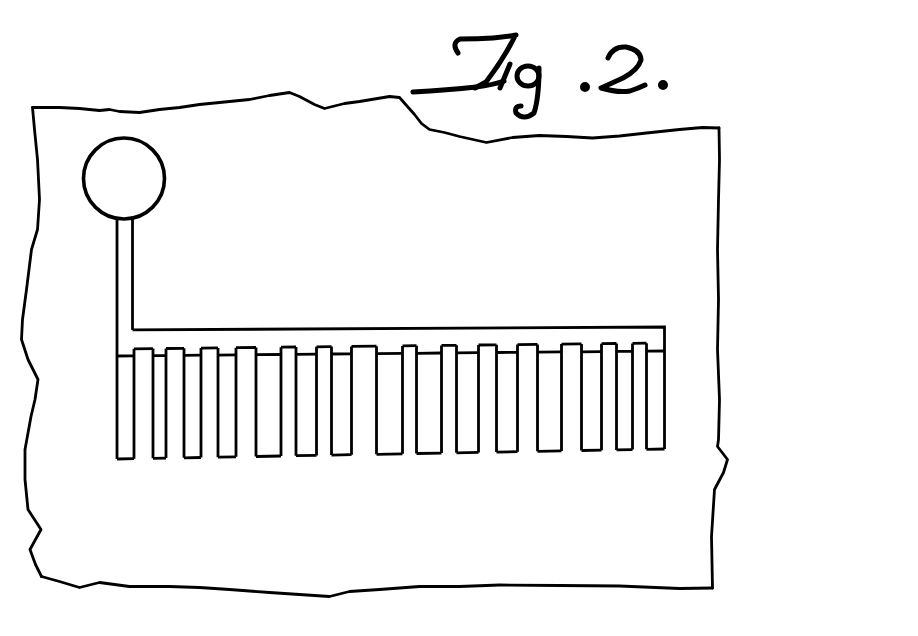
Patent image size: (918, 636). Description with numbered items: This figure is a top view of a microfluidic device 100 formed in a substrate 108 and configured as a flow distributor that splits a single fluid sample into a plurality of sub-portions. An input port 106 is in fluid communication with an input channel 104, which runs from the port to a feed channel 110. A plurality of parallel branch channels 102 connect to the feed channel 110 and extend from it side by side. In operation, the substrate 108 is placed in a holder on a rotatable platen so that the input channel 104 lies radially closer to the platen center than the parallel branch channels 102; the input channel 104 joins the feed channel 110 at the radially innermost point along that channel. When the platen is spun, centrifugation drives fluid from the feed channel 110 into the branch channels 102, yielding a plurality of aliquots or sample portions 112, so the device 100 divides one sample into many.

The microfluidic device 100 is at (661, 240).
The parallel branch channels 102 is at (653, 410).
The input channel 104 is at (122, 238).
The input port 106 is at (132, 140).
The substrate 108 is at (683, 157).
The feed channel 110 is at (635, 321).
The sample portions 112 is at (647, 370).